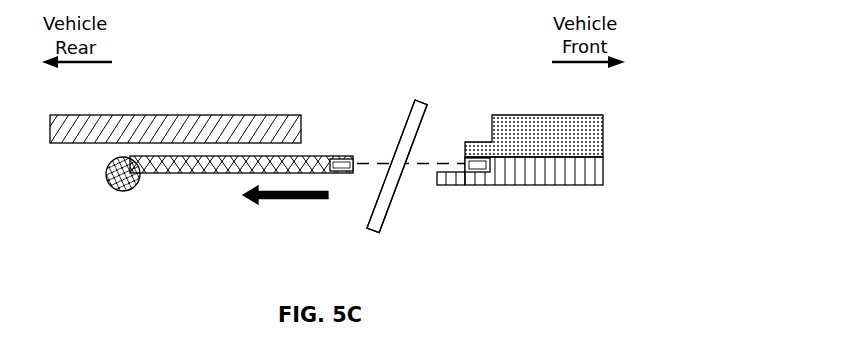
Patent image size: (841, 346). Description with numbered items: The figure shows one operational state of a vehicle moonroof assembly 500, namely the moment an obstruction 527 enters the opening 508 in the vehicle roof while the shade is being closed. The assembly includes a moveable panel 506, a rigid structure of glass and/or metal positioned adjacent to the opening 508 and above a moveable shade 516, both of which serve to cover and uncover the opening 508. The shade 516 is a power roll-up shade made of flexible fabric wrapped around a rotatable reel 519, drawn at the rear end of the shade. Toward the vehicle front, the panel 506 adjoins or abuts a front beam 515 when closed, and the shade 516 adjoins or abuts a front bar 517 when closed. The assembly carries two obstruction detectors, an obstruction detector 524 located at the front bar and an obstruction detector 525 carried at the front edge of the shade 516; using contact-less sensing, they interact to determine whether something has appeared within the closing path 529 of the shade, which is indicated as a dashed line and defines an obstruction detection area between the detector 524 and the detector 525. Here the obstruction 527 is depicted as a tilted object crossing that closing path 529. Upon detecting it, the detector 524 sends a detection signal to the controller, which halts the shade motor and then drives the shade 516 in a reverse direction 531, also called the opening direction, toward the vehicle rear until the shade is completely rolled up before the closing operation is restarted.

The moonroof assembly 500 is at (369, 57).
The moveable panel 506 is at (78, 115).
The moveable shade 516 is at (173, 174).
The rotatable reel 519 is at (106, 172).
The obstruction detector 525 is at (341, 160).
The obstruction 527 is at (421, 100).
The closing path 529 is at (437, 162).
The opening 508 is at (421, 205).
The front beam 515 is at (604, 133).
The front bar 517 is at (604, 171).
The obstruction detector 524 is at (478, 166).
The reverse direction 531 is at (272, 200).